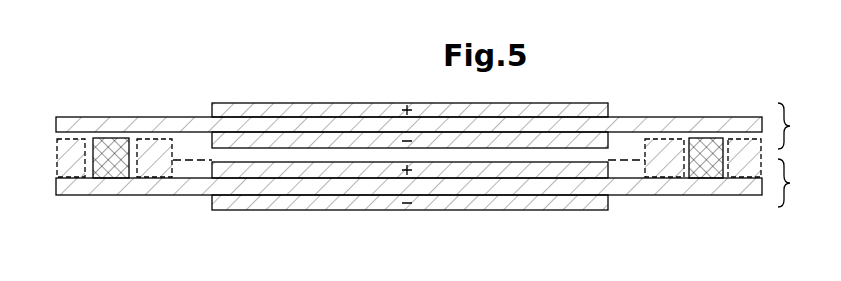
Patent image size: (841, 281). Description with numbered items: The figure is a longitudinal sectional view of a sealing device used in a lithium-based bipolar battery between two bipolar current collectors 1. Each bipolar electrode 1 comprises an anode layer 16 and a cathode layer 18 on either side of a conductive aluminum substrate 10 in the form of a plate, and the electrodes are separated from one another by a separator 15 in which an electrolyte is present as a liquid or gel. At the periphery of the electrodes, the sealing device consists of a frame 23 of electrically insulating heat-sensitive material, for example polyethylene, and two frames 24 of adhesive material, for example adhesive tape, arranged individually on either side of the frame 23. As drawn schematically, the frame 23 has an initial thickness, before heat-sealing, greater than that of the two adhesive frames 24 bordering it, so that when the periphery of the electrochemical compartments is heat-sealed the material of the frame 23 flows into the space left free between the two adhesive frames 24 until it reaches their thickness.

The bipolar electrode 1 is at (791, 155).
The conductive aluminum substrate 10 is at (177, 125).
The separator 15 is at (638, 160).
The anode layer 16 is at (358, 112).
The cathode layer 18 is at (300, 109).
The frame of electrically insulating heat-sensitive material 23 is at (113, 138).
The frame of adhesive material 24 is at (83, 195).